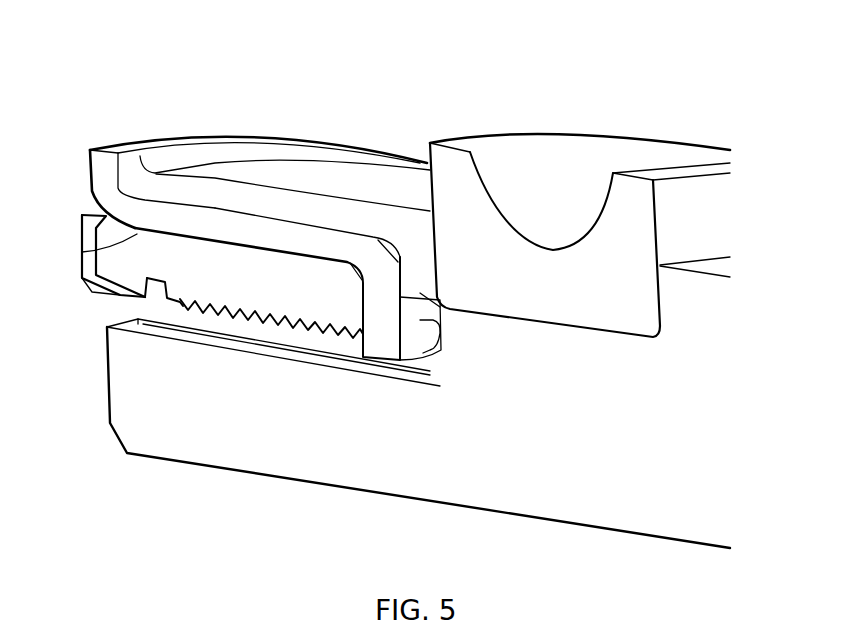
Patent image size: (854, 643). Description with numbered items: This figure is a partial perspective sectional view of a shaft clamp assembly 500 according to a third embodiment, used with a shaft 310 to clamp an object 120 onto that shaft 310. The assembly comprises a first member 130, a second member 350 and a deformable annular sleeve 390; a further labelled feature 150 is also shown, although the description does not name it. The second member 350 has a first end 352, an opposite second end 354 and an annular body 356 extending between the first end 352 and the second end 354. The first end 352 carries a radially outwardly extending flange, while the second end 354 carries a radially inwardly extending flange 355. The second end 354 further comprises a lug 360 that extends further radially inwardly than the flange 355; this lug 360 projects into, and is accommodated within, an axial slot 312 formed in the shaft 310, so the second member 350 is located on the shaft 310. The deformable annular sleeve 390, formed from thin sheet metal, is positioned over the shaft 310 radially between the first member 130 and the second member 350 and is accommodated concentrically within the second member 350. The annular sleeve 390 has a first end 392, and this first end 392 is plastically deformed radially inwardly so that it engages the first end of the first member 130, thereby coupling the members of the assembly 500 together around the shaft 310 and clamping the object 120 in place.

The assembly 500 is at (392, 97).
The second member 350 is at (224, 256).
The first end of the second member 352 is at (98, 180).
The annular body 356 is at (230, 223).
The inner recess 150 is at (247, 193).
The lug 360 is at (385, 346).
The second end of the second member 354 is at (378, 282).
The radially inwardly extending flange 355 is at (377, 298).
The object 120 is at (630, 241).
The deformable annular sleeve 390 is at (88, 254).
The first end of the annular sleeve 392 is at (92, 292).
The first member 130 is at (162, 258).
The shaft 310 is at (456, 418).
The axial slot 312 is at (203, 341).